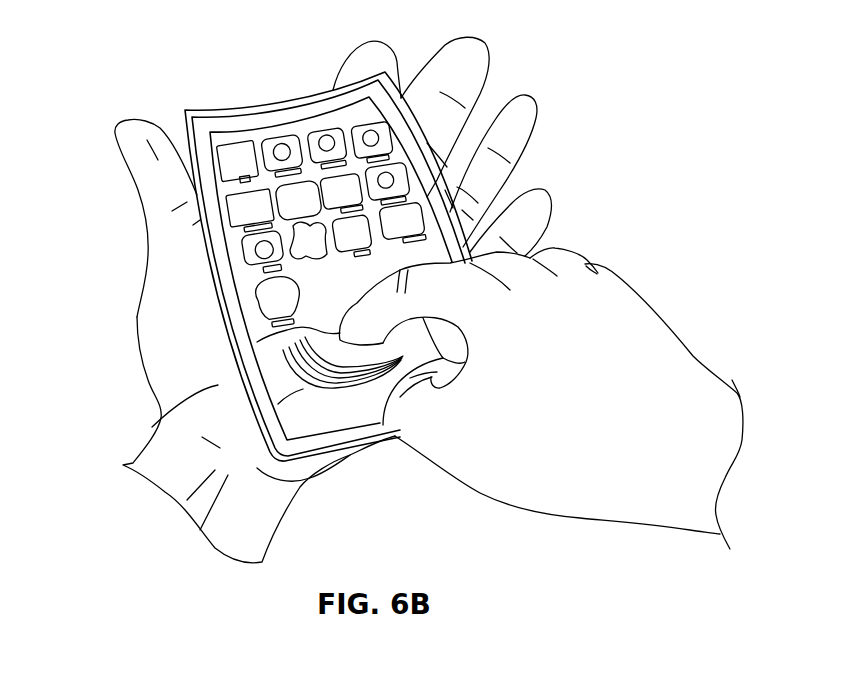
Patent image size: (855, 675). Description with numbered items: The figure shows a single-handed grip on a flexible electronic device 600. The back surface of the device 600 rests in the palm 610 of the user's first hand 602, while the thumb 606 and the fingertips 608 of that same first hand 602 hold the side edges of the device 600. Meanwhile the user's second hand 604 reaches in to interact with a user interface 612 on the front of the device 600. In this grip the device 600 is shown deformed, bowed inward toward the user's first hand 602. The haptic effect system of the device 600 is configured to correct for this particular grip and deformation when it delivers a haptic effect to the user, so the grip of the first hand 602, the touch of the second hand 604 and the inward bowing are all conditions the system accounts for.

The flexible electronic device 600 is at (282, 103).
The first hand 602 is at (290, 289).
The second hand 604 is at (628, 343).
The thumb 606 is at (137, 128).
The fingertips 608 is at (473, 52).
The palm 610 is at (170, 415).
The user interface 612 is at (330, 270).